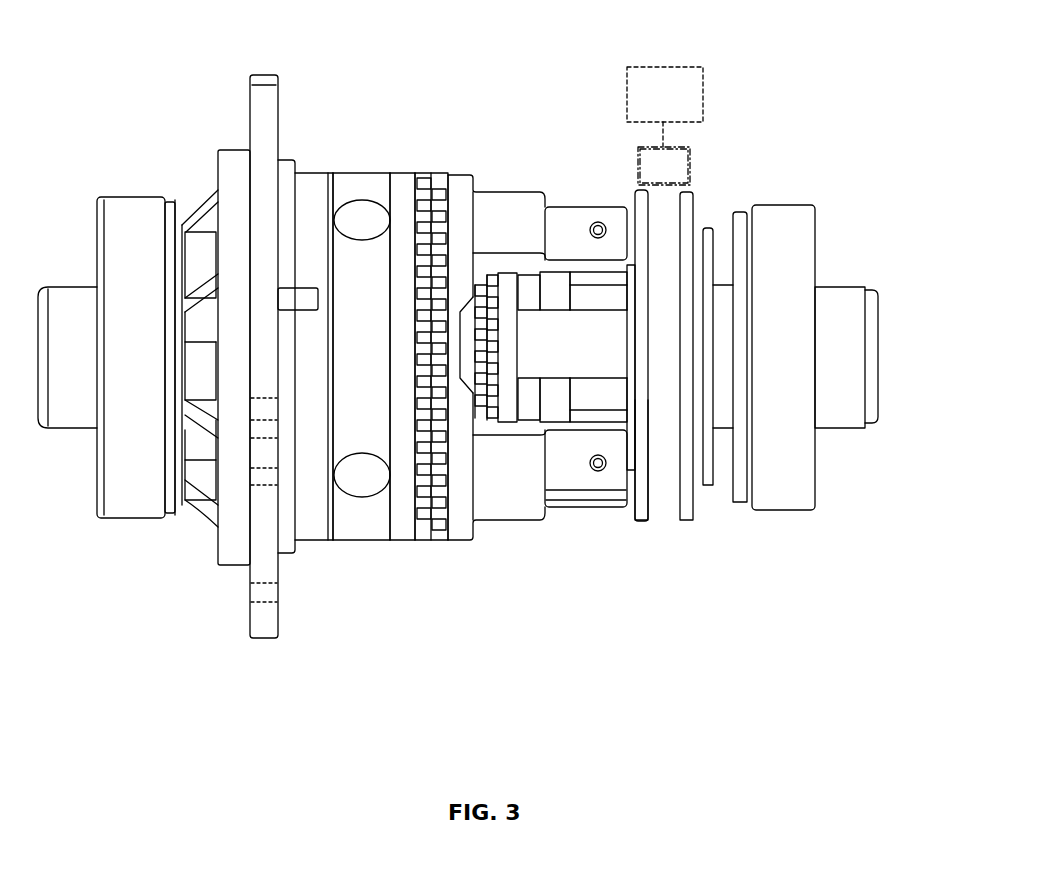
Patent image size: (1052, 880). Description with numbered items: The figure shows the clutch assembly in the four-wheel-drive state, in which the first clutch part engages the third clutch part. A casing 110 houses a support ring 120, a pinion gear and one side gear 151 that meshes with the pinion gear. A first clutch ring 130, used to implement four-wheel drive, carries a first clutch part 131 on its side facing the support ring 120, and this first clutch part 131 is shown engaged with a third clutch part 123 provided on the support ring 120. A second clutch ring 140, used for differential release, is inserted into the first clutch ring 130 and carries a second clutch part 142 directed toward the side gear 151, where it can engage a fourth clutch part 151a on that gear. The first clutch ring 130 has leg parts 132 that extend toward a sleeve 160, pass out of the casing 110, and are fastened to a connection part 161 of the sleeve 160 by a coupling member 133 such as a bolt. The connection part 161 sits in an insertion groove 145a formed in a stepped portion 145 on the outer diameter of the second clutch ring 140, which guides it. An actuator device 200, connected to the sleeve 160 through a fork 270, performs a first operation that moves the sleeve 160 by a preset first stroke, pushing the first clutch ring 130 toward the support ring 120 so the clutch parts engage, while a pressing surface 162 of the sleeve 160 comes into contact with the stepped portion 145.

The casing 110 is at (232, 148).
The support ring 120 is at (320, 172).
The third clutch part 123 is at (418, 172).
The first clutch ring 130 is at (510, 190).
The first clutch part 131 is at (440, 172).
The leg part 132 is at (568, 214).
The coupling member 133 is at (597, 474).
The second clutch ring 140 is at (550, 362).
The second clutch part 142 is at (495, 430).
The stepped portion 145 is at (620, 210).
The insertion groove 145a is at (627, 268).
The one side gear 151 is at (460, 377).
The fourth clutch part 151a is at (480, 427).
The sleeve 160 is at (705, 525).
The connection part 161 is at (607, 415).
The pressing surface 162 is at (623, 523).
The actuator device 200 is at (687, 107).
The fork 270 is at (692, 157).